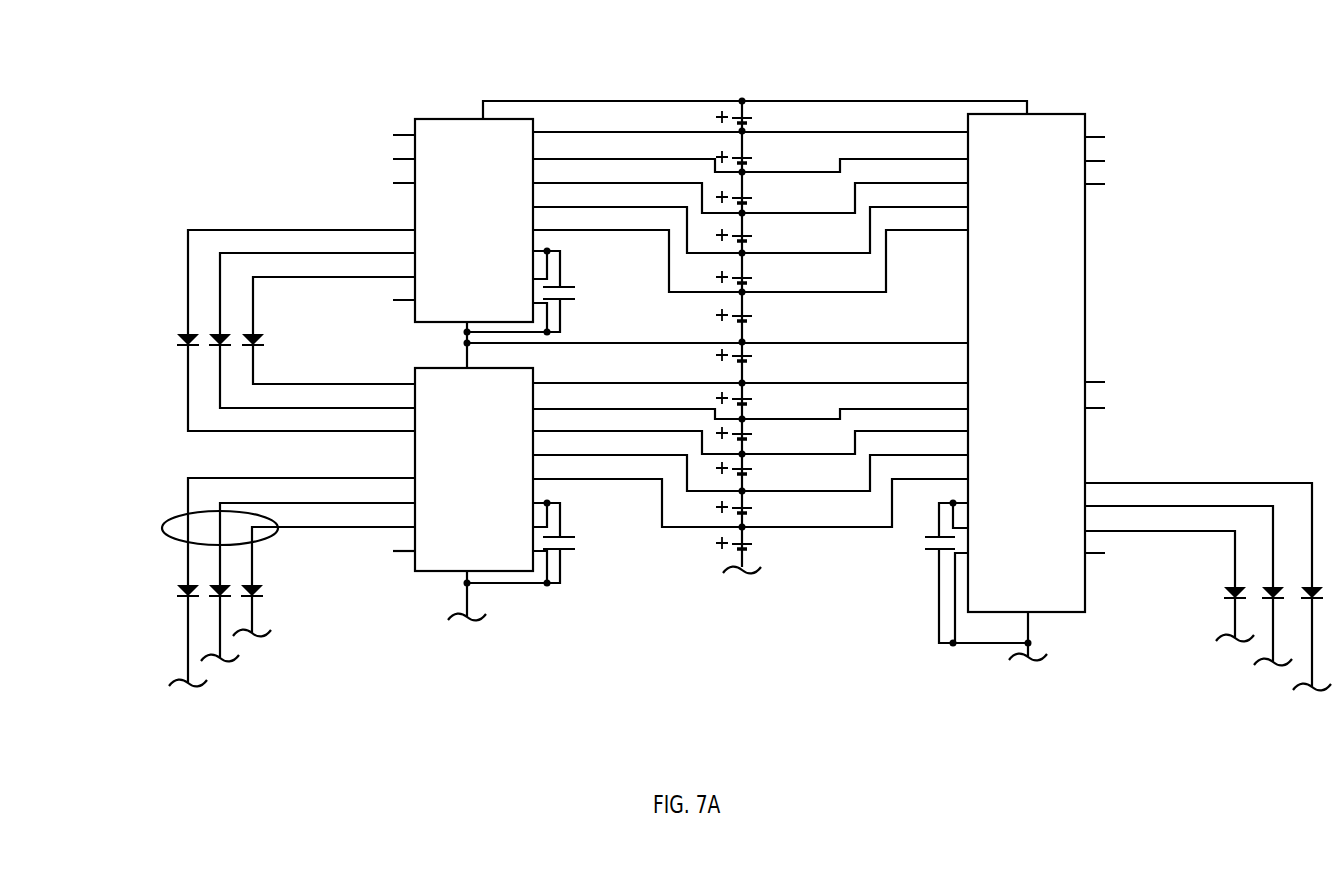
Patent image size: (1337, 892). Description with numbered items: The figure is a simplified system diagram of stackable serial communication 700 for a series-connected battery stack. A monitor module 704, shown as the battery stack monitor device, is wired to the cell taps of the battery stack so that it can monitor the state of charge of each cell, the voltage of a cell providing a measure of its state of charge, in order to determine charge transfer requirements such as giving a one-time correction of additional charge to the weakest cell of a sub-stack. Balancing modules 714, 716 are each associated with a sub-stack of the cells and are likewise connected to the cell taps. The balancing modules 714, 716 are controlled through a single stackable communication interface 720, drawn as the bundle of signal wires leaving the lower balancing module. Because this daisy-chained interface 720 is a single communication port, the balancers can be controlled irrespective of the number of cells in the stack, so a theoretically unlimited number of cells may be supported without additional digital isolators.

The battery monitoring circuit 700 is at (148, 106).
The monitor module 704 is at (968, 312).
The balancing module 714 is at (415, 468).
The balancing module 716 is at (415, 222).
The stackable communication interface 720 is at (188, 514).